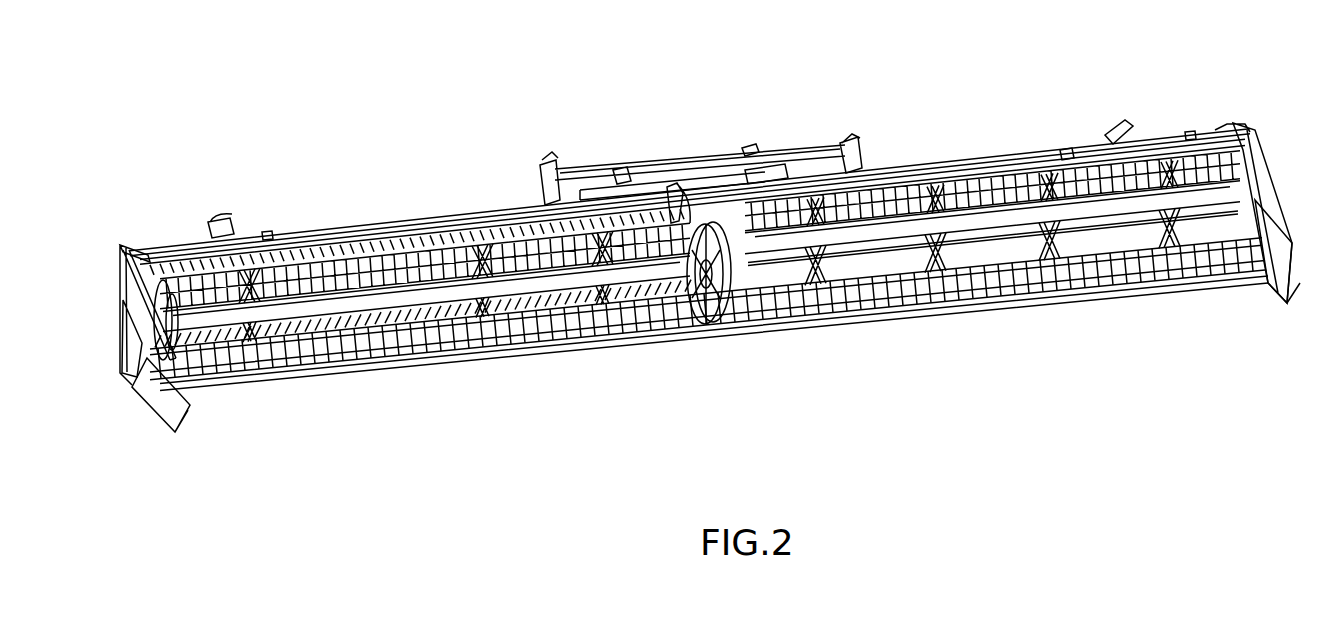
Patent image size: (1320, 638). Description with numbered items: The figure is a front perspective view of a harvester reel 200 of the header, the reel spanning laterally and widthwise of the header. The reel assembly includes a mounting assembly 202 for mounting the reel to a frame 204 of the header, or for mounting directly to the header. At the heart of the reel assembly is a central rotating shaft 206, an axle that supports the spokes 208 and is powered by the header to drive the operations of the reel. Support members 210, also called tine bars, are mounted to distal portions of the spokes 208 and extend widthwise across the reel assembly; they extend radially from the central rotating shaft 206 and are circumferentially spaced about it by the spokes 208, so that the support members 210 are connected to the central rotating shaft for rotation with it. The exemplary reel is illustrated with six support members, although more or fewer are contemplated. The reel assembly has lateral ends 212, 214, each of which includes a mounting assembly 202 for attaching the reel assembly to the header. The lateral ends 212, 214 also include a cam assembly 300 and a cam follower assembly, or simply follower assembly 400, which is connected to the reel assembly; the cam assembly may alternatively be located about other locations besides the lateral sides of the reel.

The harvester reel 200 is at (698, 269).
The mounting assembly 202 is at (698, 224).
The frame 204 is at (658, 163).
The central rotating shaft 206 is at (995, 230).
The spokes 208 is at (1147, 197).
The support members 210 is at (333, 338).
The lateral end 212 is at (130, 247).
The lateral end 214 is at (1243, 128).
The cam assembly 300 is at (712, 338).
The follower assembly 400 is at (195, 427).